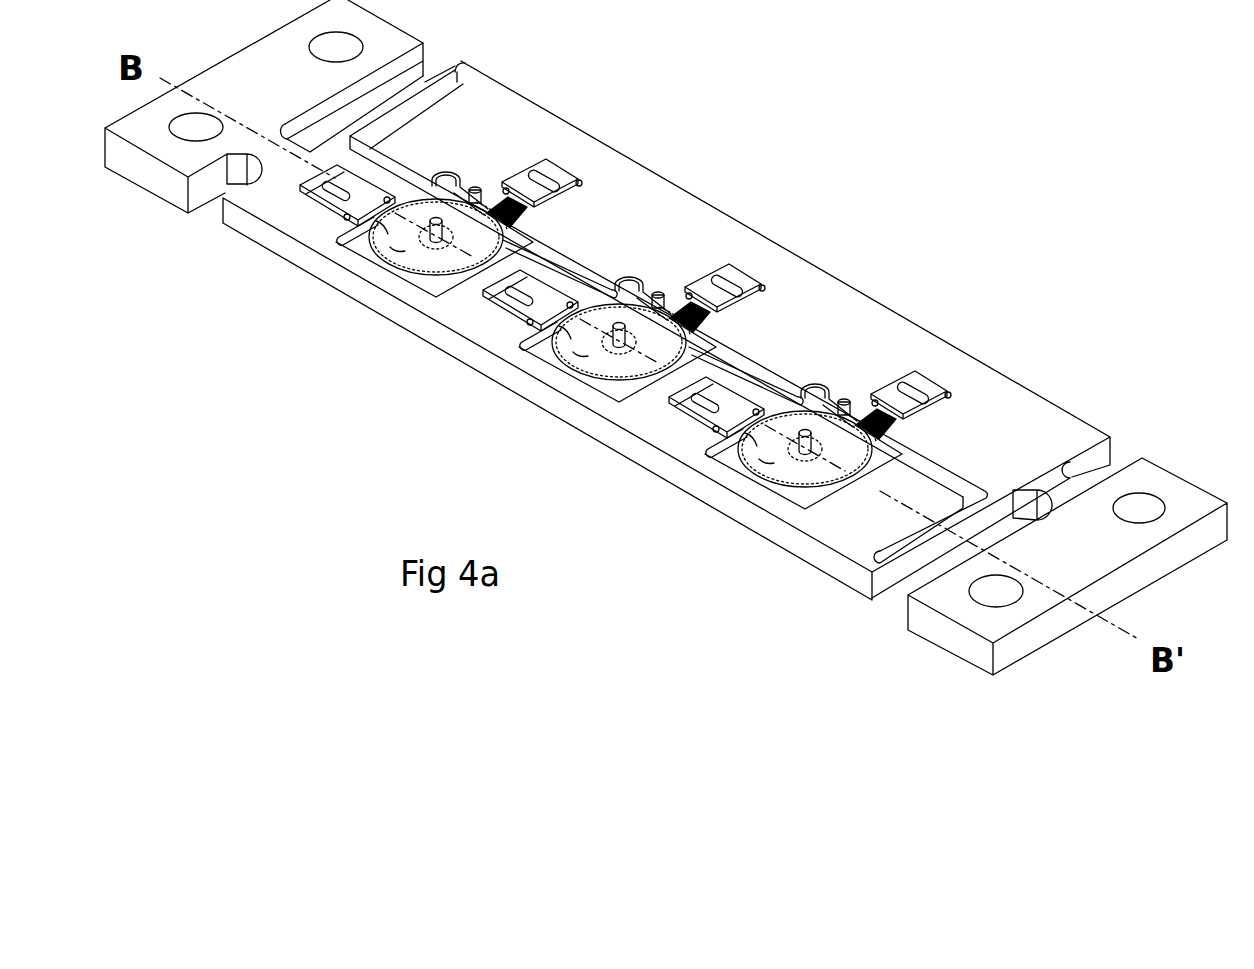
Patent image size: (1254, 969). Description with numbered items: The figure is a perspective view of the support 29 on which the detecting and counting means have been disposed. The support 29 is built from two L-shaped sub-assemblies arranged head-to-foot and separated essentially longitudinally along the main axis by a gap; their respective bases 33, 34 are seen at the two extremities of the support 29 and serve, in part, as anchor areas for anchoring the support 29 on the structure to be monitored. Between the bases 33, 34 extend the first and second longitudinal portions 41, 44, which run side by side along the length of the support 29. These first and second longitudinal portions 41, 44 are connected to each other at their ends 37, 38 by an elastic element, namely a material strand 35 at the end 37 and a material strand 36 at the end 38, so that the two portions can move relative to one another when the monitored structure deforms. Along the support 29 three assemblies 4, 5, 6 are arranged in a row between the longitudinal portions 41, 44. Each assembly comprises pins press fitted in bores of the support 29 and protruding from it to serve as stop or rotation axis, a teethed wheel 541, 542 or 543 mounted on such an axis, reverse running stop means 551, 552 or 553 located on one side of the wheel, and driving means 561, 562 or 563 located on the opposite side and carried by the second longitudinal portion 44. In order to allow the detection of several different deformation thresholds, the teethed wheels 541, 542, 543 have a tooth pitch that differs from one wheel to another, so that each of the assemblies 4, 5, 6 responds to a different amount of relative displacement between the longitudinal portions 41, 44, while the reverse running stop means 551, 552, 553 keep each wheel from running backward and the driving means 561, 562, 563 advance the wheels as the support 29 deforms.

The support 29 is at (843, 282).
The base of the first L-shaped sub-assembly 33 is at (213, 82).
The base of the second L-shaped sub-assembly 34 is at (1128, 548).
The material strand 35 is at (427, 82).
The material strand 36 is at (912, 558).
The end of the longitudinal portions 37 is at (466, 61).
The end of the longitudinal portions 38 is at (857, 562).
The first longitudinal portion 41 is at (313, 268).
The second longitudinal portion 44 is at (722, 232).
The assembly 4 is at (378, 230).
The assembly 5 is at (593, 368).
The assembly 6 is at (775, 478).
The teethed wheel 541 is at (403, 248).
The teethed wheel 542 is at (575, 343).
The teethed wheel 543 is at (760, 470).
The reverse running stop means 551 is at (302, 197).
The reverse running stop means 552 is at (485, 296).
The reverse running stop means 553 is at (670, 402).
The driving means 561 is at (527, 185).
The driving means 562 is at (707, 283).
The driving means 563 is at (888, 397).